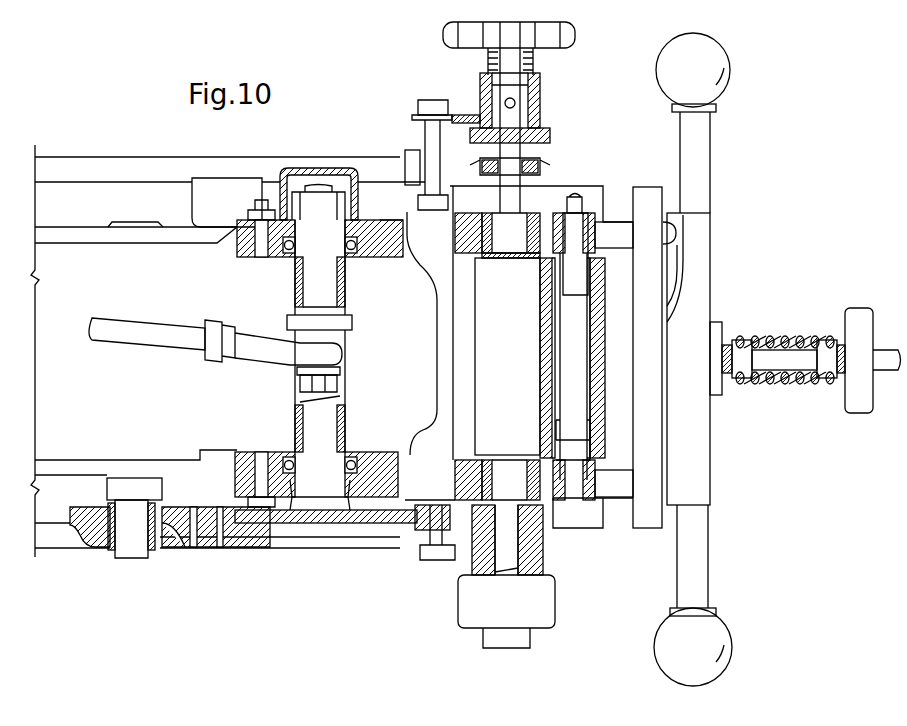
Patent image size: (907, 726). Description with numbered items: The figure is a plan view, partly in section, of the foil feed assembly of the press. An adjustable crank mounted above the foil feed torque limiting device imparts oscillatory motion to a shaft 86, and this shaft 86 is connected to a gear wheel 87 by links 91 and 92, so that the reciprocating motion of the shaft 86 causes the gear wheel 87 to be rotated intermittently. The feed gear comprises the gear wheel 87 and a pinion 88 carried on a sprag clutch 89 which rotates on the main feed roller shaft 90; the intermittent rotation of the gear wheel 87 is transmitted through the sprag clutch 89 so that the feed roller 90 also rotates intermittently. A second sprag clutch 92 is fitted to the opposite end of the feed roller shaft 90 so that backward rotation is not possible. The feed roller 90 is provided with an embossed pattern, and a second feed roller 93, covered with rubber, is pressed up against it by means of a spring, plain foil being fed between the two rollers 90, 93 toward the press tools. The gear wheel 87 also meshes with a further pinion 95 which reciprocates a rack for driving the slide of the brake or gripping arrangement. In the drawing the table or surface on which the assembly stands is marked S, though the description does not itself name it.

The shaft 86 is at (171, 333).
The link 91 is at (250, 336).
The link 92 is at (540, 104).
The main feed roller shaft 90 is at (512, 359).
The second feed roller 93 is at (596, 362).
The pinion 88 is at (545, 528).
The sprag clutch 89 is at (548, 612).
The gear wheel 87 is at (405, 530).
The further pinion 95 is at (85, 521).
The table surface S is at (315, 574).